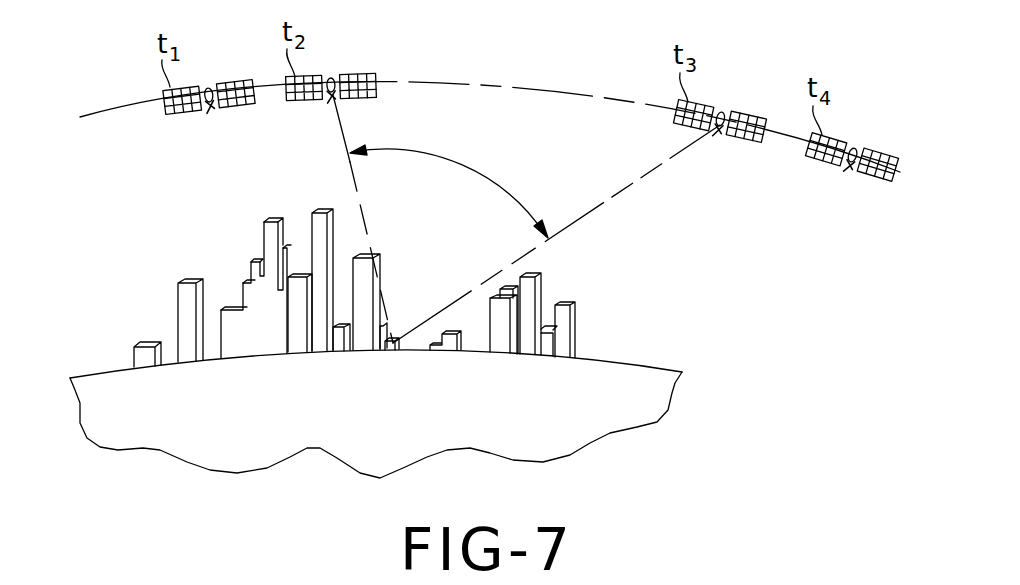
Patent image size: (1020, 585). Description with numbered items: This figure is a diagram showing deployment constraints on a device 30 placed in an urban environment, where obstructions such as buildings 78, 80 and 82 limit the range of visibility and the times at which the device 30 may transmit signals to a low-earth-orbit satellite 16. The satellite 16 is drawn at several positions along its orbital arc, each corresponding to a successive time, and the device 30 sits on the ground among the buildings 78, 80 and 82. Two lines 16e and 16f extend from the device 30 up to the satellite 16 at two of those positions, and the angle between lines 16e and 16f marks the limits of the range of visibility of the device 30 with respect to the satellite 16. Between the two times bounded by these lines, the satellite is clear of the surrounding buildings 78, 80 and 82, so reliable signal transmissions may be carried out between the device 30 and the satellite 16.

The satellite 16 is at (334, 76).
The line 16e is at (338, 130).
The line 16f is at (658, 174).
The device 30 is at (389, 352).
The building 78 is at (537, 276).
The building 80 is at (503, 348).
The building 82 is at (357, 272).